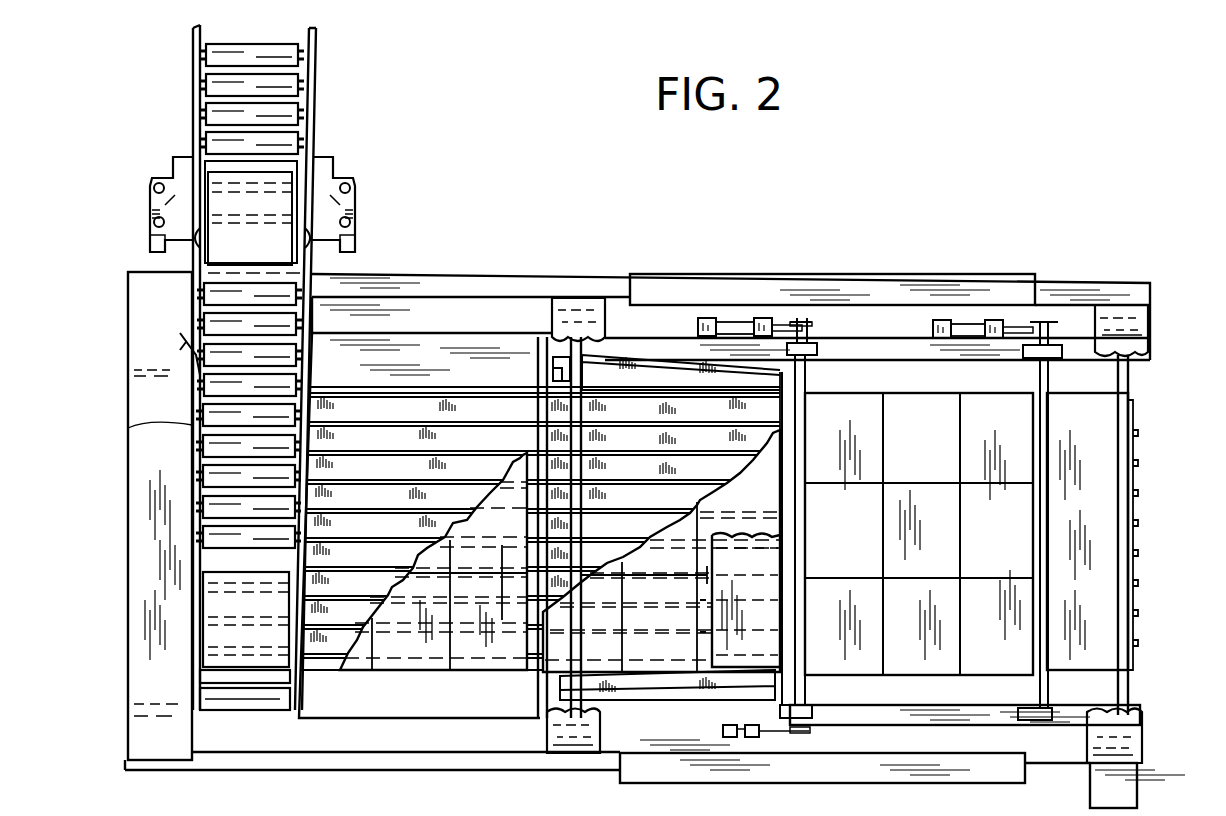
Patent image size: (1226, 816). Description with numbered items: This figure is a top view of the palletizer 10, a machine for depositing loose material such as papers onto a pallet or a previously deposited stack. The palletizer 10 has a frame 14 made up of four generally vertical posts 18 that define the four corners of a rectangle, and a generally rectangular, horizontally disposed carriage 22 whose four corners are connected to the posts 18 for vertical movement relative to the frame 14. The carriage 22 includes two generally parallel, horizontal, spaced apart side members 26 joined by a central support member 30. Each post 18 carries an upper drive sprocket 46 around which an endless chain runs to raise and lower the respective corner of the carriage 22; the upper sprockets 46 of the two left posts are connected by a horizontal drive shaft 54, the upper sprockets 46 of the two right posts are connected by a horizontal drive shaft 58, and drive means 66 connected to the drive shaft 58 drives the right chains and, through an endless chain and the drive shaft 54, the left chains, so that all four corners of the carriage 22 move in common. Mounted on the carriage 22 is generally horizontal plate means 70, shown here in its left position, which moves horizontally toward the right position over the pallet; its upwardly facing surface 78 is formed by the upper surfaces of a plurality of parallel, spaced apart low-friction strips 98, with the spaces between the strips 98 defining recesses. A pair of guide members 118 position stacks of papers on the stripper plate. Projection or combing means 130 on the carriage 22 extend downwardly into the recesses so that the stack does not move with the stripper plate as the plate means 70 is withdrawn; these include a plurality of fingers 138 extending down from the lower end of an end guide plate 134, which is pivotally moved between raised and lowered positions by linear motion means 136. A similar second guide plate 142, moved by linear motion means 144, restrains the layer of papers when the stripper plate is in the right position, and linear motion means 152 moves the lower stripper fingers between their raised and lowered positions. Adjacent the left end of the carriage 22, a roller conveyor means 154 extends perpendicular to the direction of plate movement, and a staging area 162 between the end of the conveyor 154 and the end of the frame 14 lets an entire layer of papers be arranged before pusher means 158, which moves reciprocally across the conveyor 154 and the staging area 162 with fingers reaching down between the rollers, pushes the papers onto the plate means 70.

The palletizer 10 is at (705, 250).
The frame 14 is at (886, 290).
The posts 18 is at (592, 300).
The carriage 22 is at (948, 708).
The side members 26 is at (903, 352).
The central support member 30 is at (792, 380).
The upper drive sprocket 46 is at (550, 318).
The horizontal drive shaft 54 is at (572, 442).
The horizontal drive shaft 58 is at (1130, 362).
The drive means 66 is at (1135, 778).
The plate means 70 is at (760, 412).
The upwardly facing surface 78 is at (705, 468).
The low-friction strips 98 is at (683, 500).
The guide members 118 is at (665, 368).
The projection or combing means 130 is at (745, 620).
The end guide member or plate 134 is at (760, 560).
The linear motion means 136 is at (735, 322).
The fingers 138 is at (705, 602).
The second guide member or plate 142 is at (1098, 546).
The linear motion means 144 is at (970, 322).
The linear motion means 152 is at (752, 740).
The conveyor means 154 is at (350, 114).
The pusher means 158 is at (198, 422).
The staging area 162 is at (402, 408).